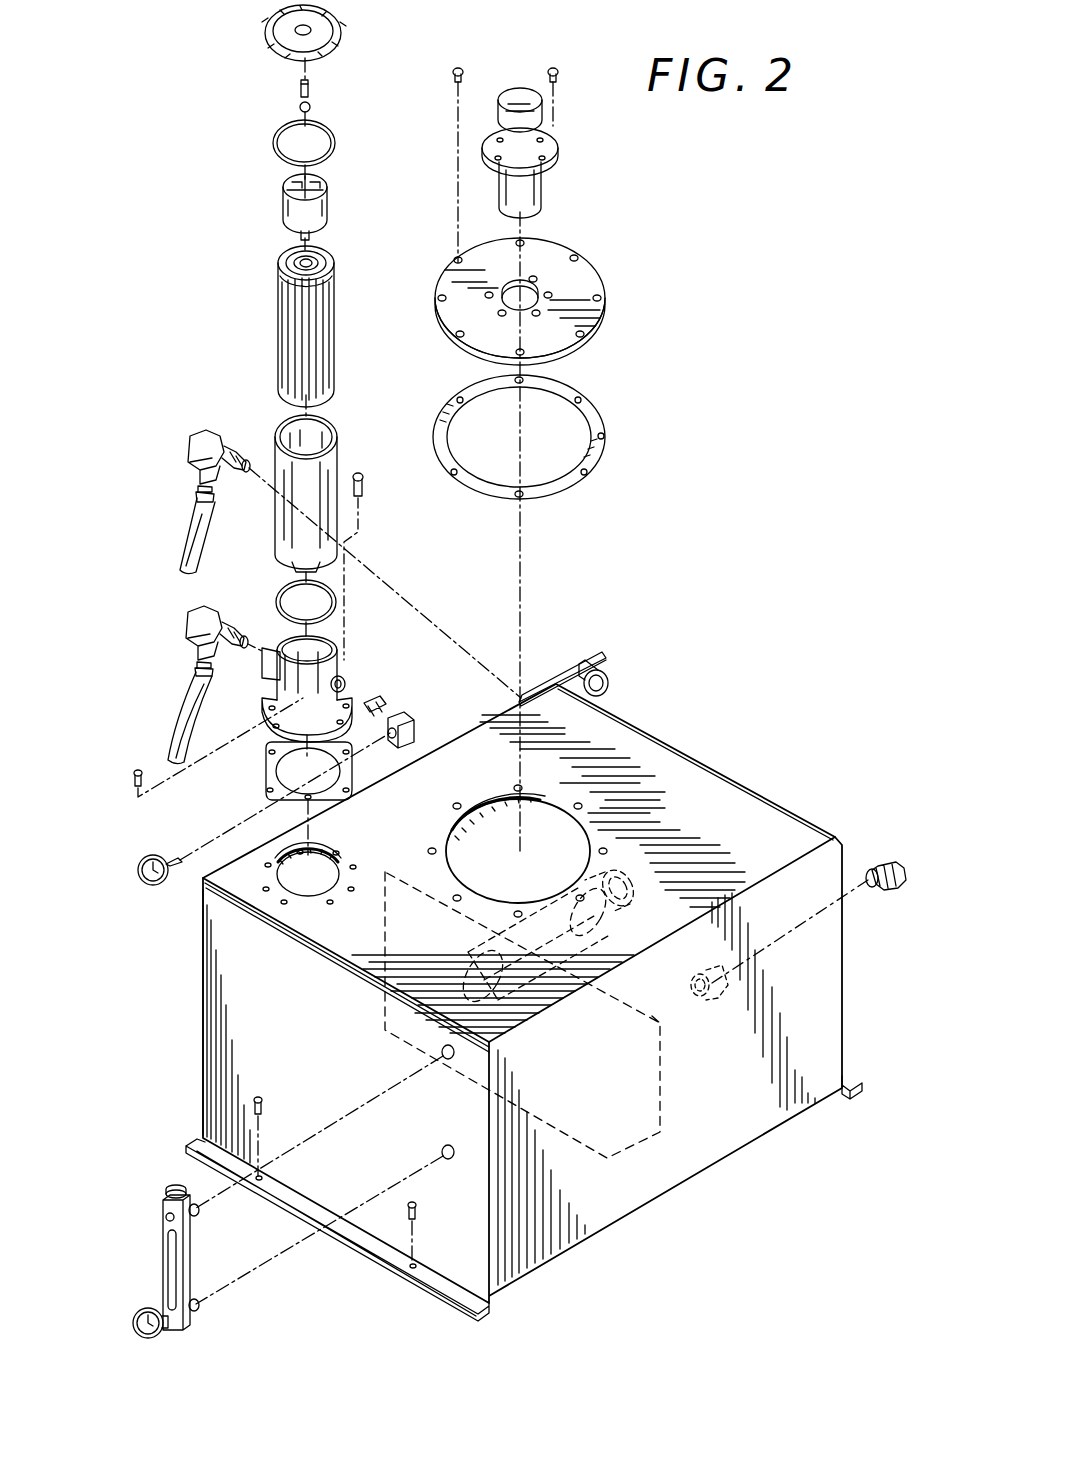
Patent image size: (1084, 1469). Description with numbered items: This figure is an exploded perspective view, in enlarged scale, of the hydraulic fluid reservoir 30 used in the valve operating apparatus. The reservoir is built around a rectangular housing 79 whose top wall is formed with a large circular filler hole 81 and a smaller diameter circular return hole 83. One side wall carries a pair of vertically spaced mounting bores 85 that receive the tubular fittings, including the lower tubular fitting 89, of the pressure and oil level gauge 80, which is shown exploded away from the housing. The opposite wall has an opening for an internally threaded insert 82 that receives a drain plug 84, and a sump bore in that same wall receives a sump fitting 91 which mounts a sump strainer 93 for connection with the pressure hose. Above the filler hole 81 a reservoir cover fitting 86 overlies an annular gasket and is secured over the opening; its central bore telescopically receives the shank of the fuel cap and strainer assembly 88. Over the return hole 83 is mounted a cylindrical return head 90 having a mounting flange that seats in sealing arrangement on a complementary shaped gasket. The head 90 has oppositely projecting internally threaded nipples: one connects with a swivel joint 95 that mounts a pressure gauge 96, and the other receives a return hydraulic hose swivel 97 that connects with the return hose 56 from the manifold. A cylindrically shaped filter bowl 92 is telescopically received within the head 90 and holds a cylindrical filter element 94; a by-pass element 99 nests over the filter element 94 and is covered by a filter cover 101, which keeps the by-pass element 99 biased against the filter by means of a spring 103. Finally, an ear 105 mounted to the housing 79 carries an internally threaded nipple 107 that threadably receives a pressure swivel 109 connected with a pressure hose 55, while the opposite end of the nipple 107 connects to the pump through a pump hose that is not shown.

The fluid reservoir 30 is at (524, 1002).
The rectangular housing 79 is at (772, 800).
The filler hole 81 is at (542, 815).
The return hole 83 is at (302, 890).
The lower tubular fitting 89 is at (320, 850).
The sump fitting 91 is at (612, 860).
The sump strainer 93 is at (578, 938).
The internally threaded insert 82 is at (700, 996).
The drain plug 84 is at (894, 862).
The ear 105 is at (598, 650).
The internally threaded nipple 107 is at (610, 680).
The fuel cap and strainer assembly 88 is at (560, 150).
The reservoir cover fitting 86 is at (606, 302).
The filter cover 101 is at (342, 20).
The spring 103 is at (312, 90).
The by-pass element 99 is at (329, 196).
The filter element 94 is at (336, 330).
The filter bowl 92 is at (340, 462).
The return head 90 is at (352, 692).
The swivel joint 95 is at (410, 716).
The pressure swivel 109 is at (198, 432).
The pressure hose 55 is at (185, 520).
The return hydraulic hose swivel 97 is at (188, 614).
The return hose 56 is at (180, 712).
The pressure gauge 96 is at (150, 887).
The mounting bores 85 is at (448, 1160).
The pressure and oil level gauge 80 is at (191, 1342).